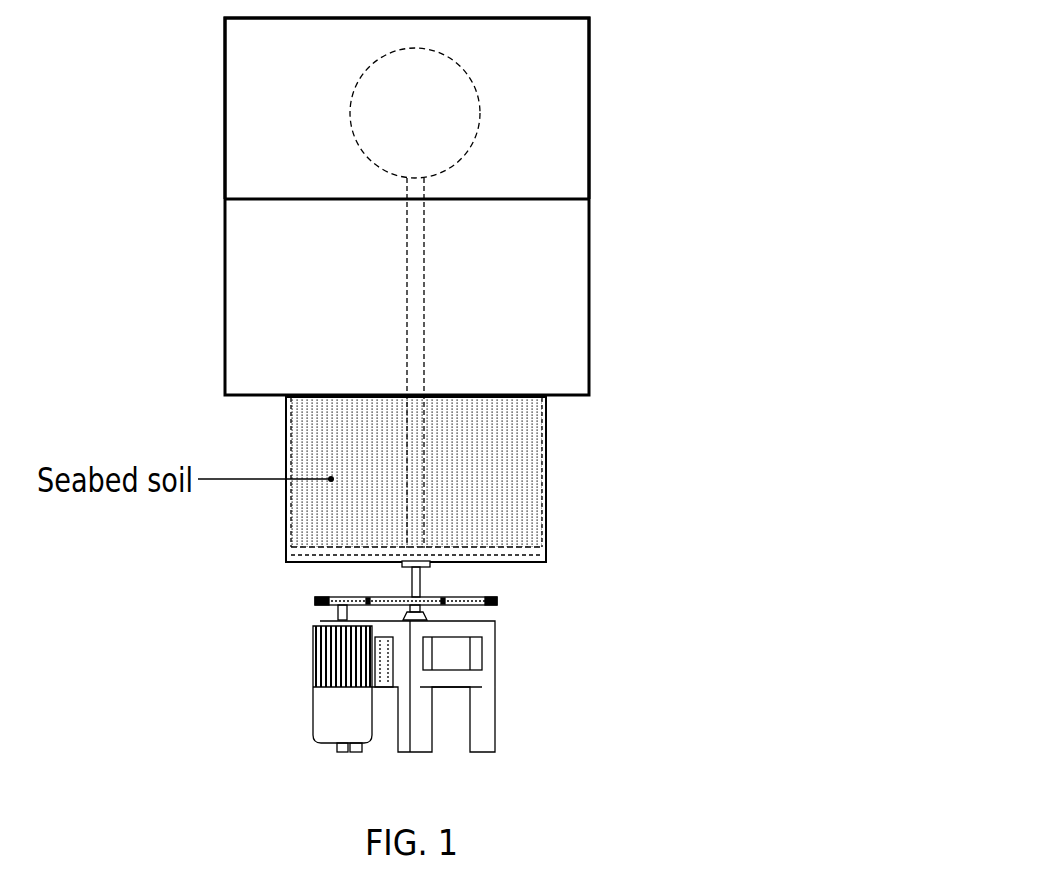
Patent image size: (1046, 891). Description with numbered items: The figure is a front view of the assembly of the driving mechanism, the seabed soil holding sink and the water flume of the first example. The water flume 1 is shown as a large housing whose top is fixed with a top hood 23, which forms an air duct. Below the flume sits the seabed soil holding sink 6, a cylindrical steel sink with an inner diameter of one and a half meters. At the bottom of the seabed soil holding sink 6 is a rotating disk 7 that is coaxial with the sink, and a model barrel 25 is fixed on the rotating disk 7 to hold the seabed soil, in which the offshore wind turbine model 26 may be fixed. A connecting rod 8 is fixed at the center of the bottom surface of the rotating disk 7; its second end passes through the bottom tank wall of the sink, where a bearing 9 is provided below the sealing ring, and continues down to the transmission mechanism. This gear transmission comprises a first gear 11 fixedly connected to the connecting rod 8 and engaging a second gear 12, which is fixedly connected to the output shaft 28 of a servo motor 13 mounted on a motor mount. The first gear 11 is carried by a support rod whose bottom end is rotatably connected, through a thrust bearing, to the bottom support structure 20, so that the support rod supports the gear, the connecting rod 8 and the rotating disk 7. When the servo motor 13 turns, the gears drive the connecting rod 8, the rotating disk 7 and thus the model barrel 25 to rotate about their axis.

The water flume 1 is at (589, 287).
The top hood 23 is at (589, 49).
The offshore wind turbine model 26 is at (478, 114).
The seabed soil holding sink 6 is at (546, 446).
The model barrel 25 is at (546, 507).
The rotating disk 7 is at (322, 562).
The bearing 9 is at (430, 563).
The connecting rod 8 is at (420, 588).
The second gear 12 is at (315, 600).
The first gear 11 is at (495, 603).
The output shaft 28 is at (338, 613).
The servo motor 13 is at (333, 722).
The bottom support structure 20 is at (487, 722).